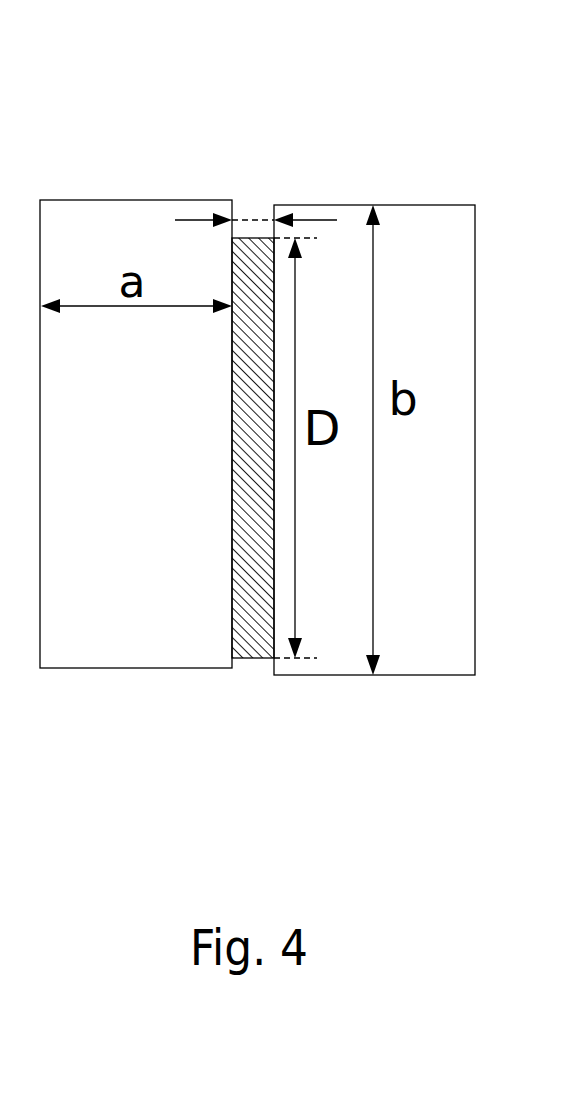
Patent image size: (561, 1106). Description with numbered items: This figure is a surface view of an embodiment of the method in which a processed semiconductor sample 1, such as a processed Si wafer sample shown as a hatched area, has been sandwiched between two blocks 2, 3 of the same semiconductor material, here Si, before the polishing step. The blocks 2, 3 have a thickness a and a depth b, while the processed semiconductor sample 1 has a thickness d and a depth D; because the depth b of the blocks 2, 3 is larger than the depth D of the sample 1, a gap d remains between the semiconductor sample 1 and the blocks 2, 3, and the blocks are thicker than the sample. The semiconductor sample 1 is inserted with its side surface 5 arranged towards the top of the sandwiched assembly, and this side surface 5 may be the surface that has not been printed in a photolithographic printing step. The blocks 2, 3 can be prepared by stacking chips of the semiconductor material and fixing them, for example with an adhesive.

The processed semiconductor sample 1 is at (252, 665).
The block of semiconductor material 2 is at (94, 199).
The block of semiconductor material 3 is at (410, 204).
The side surface 5 is at (256, 152).